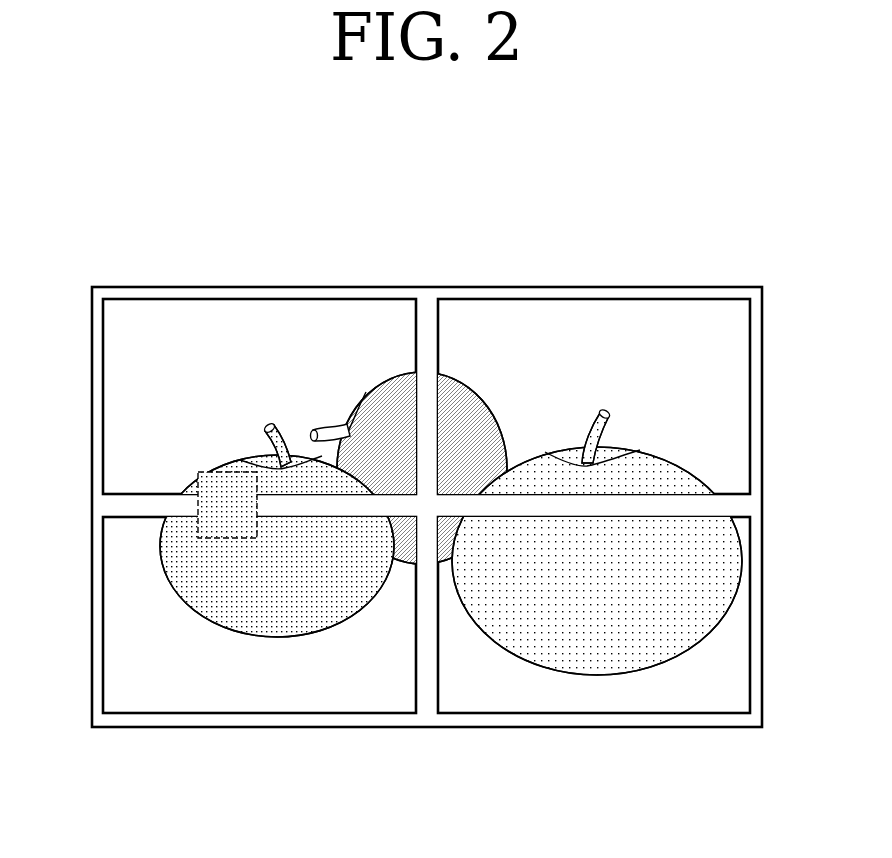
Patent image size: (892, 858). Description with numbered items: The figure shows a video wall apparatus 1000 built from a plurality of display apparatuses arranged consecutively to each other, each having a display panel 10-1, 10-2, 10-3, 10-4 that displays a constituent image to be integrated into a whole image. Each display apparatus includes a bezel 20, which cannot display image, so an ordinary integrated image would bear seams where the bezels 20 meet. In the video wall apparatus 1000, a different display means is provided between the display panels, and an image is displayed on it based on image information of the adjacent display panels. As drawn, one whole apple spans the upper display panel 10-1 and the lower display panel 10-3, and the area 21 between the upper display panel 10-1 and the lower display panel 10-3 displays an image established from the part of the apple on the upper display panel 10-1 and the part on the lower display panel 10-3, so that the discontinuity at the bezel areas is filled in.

The video wall apparatus 1000 is at (449, 158).
The bezel 20 is at (92, 410).
The area 21 is at (196, 475).
The upper display panel 10-1 is at (229, 316).
The display panel 10-2 is at (566, 316).
The lower display panel 10-3 is at (231, 697).
The display panel 10-4 is at (569, 697).